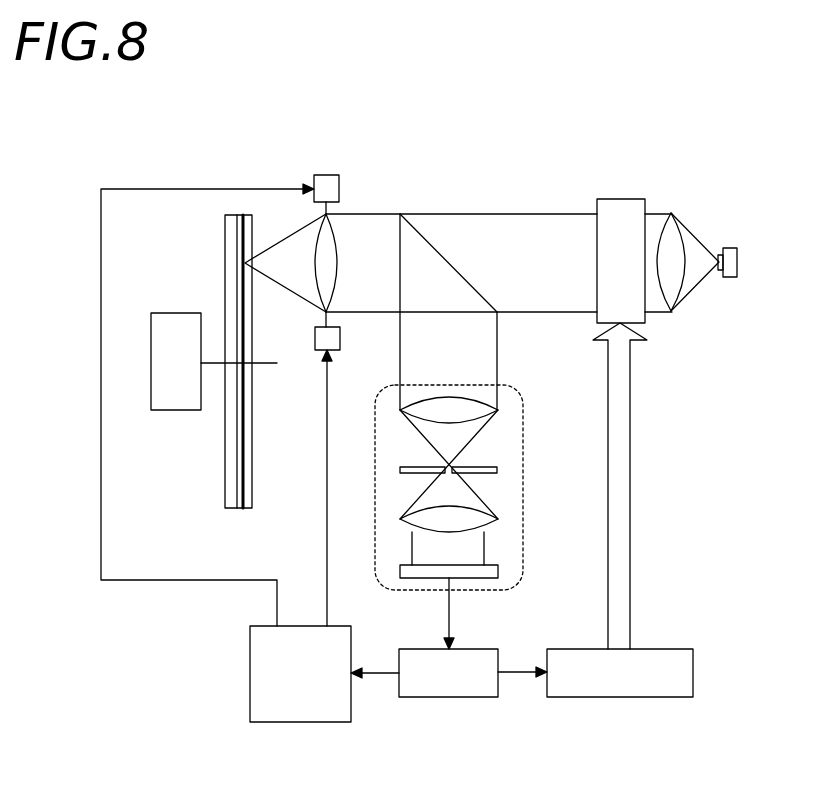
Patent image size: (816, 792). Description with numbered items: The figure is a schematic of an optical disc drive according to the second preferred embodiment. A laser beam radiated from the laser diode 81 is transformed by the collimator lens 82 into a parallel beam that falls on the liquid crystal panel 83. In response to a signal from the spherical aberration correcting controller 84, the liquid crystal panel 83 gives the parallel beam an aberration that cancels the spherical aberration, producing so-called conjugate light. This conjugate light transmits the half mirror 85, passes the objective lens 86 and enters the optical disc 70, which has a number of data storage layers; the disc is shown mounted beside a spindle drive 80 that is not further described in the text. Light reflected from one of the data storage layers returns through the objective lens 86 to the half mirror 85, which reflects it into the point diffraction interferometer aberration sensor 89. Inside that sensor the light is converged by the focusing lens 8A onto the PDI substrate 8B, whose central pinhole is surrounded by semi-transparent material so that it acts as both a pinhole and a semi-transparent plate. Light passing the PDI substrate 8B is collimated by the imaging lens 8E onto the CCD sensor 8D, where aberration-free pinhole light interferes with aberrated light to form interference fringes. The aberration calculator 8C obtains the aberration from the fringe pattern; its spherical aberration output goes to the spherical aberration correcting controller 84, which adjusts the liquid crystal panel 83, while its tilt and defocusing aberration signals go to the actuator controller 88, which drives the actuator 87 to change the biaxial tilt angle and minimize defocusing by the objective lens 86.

The optical disc 70 is at (232, 470).
The spindle motor 80 is at (184, 380).
The laser diode 81 is at (733, 248).
The collimator lens 82 is at (671, 238).
The liquid crystal panel 83 is at (616, 212).
The spherical aberration correcting controller 84 is at (620, 673).
The half mirror 85 is at (400, 214).
The objective lens 86 is at (327, 263).
The actuator 87 is at (326, 188).
The actuator controller 88 is at (277, 674).
The point diffraction interferometer aberration sensor 89 is at (524, 490).
The focusing lens 8A is at (505, 412).
The PDI substrate 8B is at (400, 470).
The aberration calculator 8C is at (473, 688).
The CCD sensor 8D is at (500, 575).
The imaging lens 8E is at (500, 522).